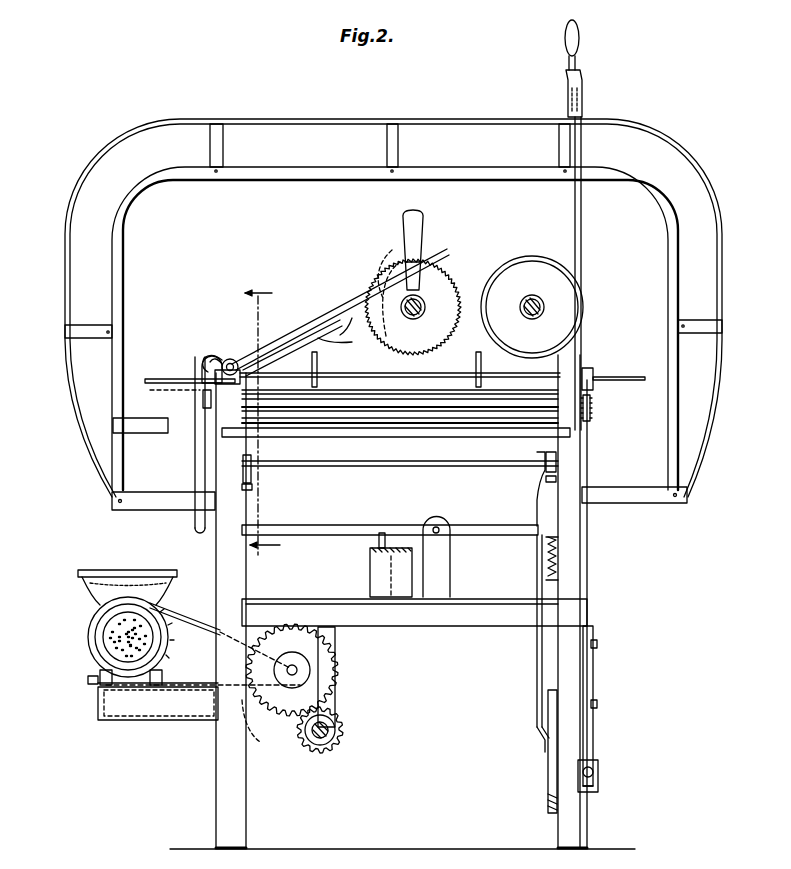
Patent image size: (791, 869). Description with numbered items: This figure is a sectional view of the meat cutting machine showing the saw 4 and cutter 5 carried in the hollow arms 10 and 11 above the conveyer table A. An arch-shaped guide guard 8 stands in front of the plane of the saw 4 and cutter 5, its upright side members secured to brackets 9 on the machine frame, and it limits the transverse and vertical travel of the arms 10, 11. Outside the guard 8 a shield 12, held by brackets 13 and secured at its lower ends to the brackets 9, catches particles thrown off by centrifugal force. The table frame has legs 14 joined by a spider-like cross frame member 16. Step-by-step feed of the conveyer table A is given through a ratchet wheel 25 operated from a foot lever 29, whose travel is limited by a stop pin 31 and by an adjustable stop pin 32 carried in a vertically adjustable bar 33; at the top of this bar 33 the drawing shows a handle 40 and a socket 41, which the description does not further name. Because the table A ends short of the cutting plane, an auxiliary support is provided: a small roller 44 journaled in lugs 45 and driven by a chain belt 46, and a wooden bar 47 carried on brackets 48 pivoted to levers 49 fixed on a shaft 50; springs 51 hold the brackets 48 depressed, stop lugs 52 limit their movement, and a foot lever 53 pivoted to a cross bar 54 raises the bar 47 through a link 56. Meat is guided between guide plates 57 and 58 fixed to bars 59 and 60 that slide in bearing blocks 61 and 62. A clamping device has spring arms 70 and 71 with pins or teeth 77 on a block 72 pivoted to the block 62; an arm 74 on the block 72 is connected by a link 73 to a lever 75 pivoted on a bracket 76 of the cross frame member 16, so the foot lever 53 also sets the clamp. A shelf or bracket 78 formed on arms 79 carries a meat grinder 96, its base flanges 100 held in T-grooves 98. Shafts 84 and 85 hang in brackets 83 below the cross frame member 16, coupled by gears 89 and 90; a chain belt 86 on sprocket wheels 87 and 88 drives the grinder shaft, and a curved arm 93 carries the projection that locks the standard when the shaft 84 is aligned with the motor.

The saw 4 is at (387, 262).
The cutter 5 is at (541, 262).
The guide guard 8 is at (125, 276).
The brackets 9 is at (165, 510).
The hollow arm 10 is at (424, 300).
The hollow arm 11 is at (544, 300).
The shield 12 is at (112, 222).
The brackets 13 is at (398, 146).
The legs 14 is at (216, 808).
The cross frame member 16 is at (484, 626).
The ratchet wheel 25 is at (592, 410).
The foot lever 29 is at (600, 774).
The stop pin 31 is at (590, 790).
The stop pin 32 is at (600, 748).
The bar 33 is at (583, 222).
The handle 40 is at (566, 60).
The handle socket 41 is at (584, 104).
The roller 44 is at (441, 392).
The lugs 45 is at (262, 372).
The chain belt 46 is at (180, 395).
The bar 47 is at (392, 436).
The brackets 48 is at (262, 448).
The levers 49 is at (252, 486).
The shaft 50 is at (430, 466).
The springs 51 is at (546, 560).
The stop lugs 52 is at (254, 492).
The foot lever 53 is at (548, 800).
The cross bar 54 is at (262, 742).
The link 56 is at (530, 496).
The guide plate 57 is at (476, 360).
The guide plate 58 is at (318, 378).
The bar 59 is at (634, 381).
The bar 60 is at (145, 382).
The bearing block 61 is at (594, 370).
The bearing block 62 is at (200, 368).
The arm 70 is at (318, 320).
The arm 71 is at (326, 300).
The block 72 is at (234, 358).
The link 73 is at (192, 454).
The arm 74 is at (214, 356).
The lever 75 is at (358, 525).
The bracket 76 is at (451, 562).
The pins or teeth 77 is at (350, 344).
The shelf or bracket 78 is at (98, 712).
The arms 79 is at (180, 720).
The brackets 83 is at (316, 660).
The shaft 84 is at (336, 724).
The shaft 85 is at (308, 674).
The chain belt 86 is at (188, 612).
The sprocket wheel 87 is at (336, 641).
The sprocket wheel 88 is at (92, 618).
The gear 89 is at (342, 748).
The gear 90 is at (282, 623).
The arm 93 is at (370, 560).
The meat grinder 96 is at (96, 570).
The T-grooves 98 is at (100, 672).
The flanges 100 is at (88, 682).
The conveyer table A is at (388, 417).